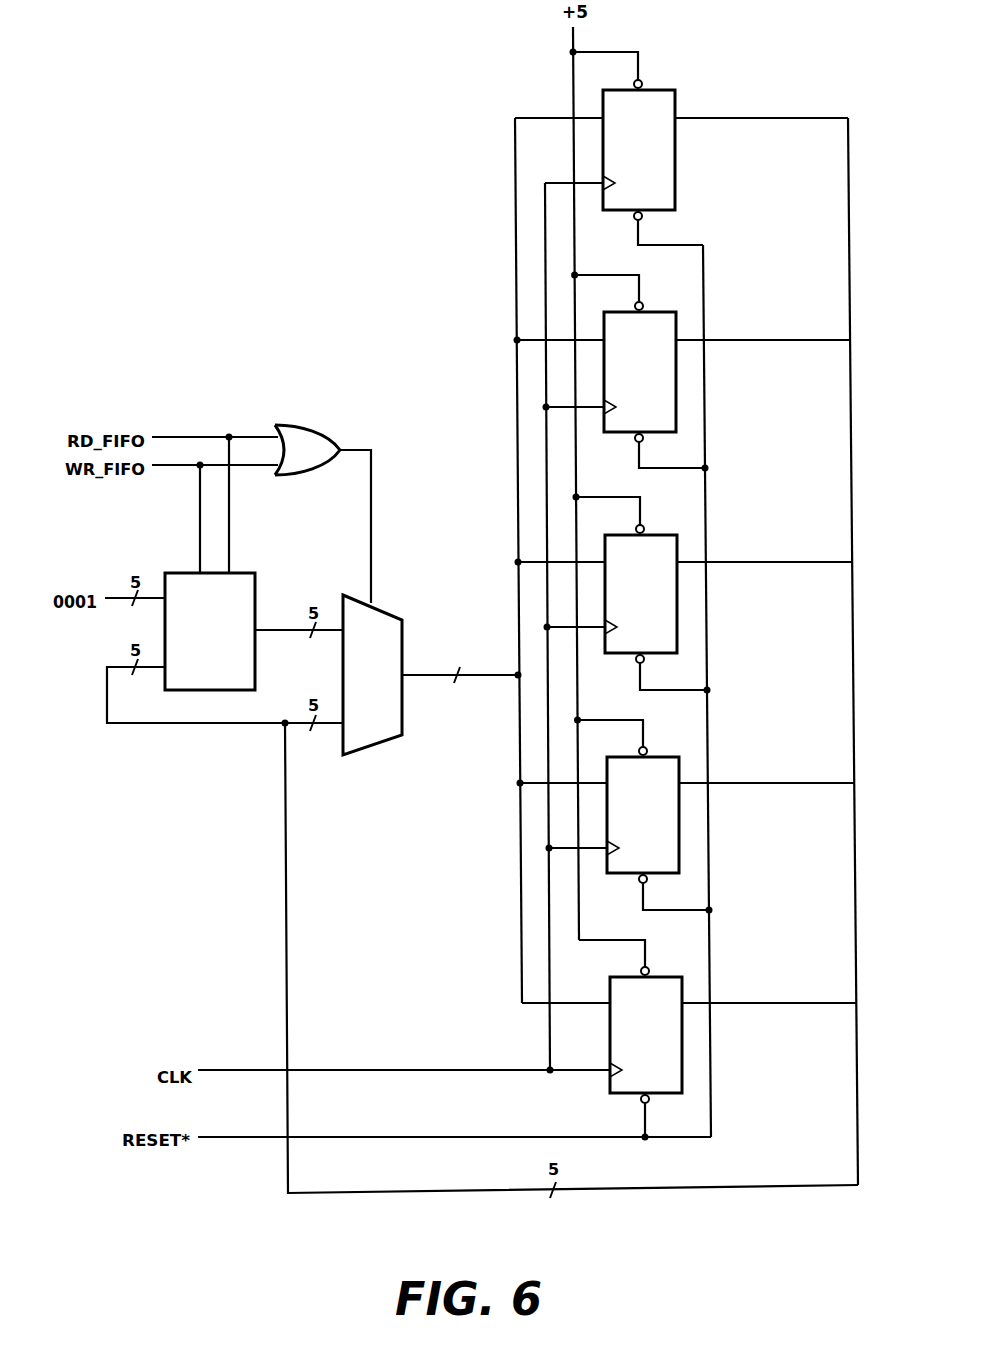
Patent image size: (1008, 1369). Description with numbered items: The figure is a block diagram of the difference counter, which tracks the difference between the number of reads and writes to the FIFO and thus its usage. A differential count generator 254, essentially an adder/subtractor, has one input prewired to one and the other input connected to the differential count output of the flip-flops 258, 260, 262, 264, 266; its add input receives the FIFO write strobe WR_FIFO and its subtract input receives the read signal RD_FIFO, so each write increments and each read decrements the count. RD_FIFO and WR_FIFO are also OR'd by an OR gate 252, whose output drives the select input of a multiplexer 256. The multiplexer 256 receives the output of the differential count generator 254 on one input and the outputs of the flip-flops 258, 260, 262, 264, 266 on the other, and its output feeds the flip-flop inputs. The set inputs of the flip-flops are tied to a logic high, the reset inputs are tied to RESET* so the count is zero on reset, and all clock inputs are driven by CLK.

The OR gate 252 is at (297, 425).
The differential count generator 254 is at (177, 573).
The multiplexer 256 is at (383, 741).
The flip-flop 258 is at (675, 189).
The flip-flop 260 is at (676, 410).
The flip-flop 262 is at (677, 630).
The flip-flop 264 is at (679, 851).
The flip-flop 266 is at (682, 1073).